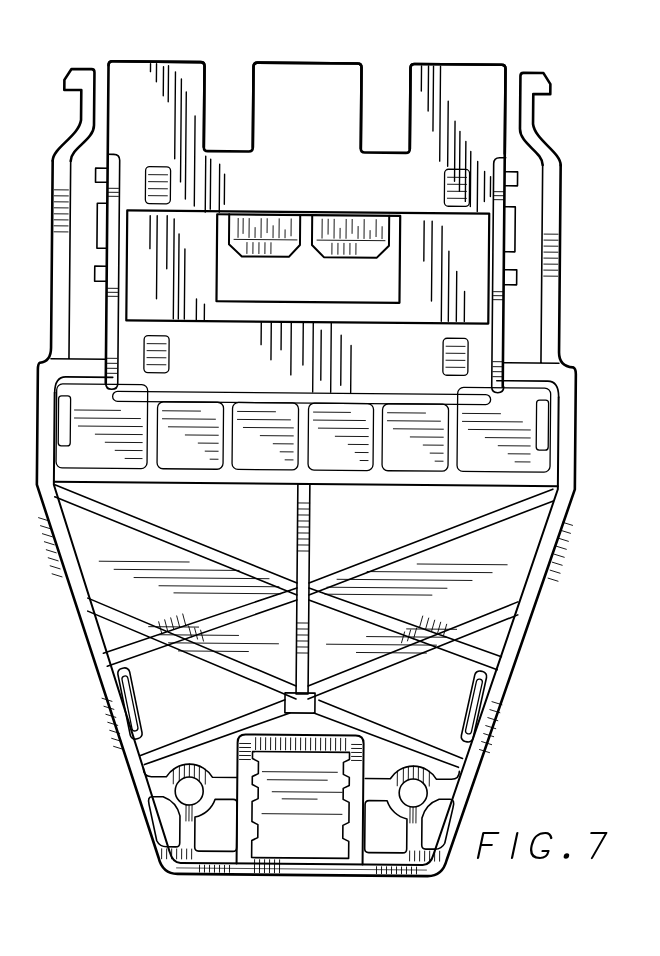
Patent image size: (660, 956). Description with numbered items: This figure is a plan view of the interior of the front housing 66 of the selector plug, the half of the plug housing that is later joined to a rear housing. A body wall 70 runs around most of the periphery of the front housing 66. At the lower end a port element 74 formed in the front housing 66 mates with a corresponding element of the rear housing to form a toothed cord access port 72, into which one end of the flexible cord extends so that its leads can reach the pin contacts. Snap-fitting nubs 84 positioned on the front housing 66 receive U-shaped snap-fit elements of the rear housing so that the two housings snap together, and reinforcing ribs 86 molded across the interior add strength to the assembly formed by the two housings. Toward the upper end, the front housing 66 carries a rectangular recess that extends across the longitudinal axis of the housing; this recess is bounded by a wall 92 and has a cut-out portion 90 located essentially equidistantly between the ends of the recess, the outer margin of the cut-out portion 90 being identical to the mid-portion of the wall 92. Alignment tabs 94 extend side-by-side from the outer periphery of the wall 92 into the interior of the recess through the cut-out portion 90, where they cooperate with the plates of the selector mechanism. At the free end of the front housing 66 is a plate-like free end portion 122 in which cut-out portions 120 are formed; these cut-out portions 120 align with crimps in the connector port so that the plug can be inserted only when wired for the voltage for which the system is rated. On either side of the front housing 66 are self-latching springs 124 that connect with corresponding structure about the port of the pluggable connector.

The front housing 66 is at (552, 558).
The body wall 70 is at (489, 717).
The toothed cord access port 72 is at (276, 877).
The port element 74 is at (343, 846).
The snap-fitting nubs 84 is at (465, 705).
The reinforcing ribs 86 is at (250, 562).
The cut-out portion 90 is at (214, 257).
The wall of the recess 92 is at (441, 227).
The alignment tabs 94 is at (333, 229).
The cut-out portions 120 is at (412, 82).
The plate-like free end portion 122 is at (156, 66).
The self-latching springs 124 is at (550, 156).